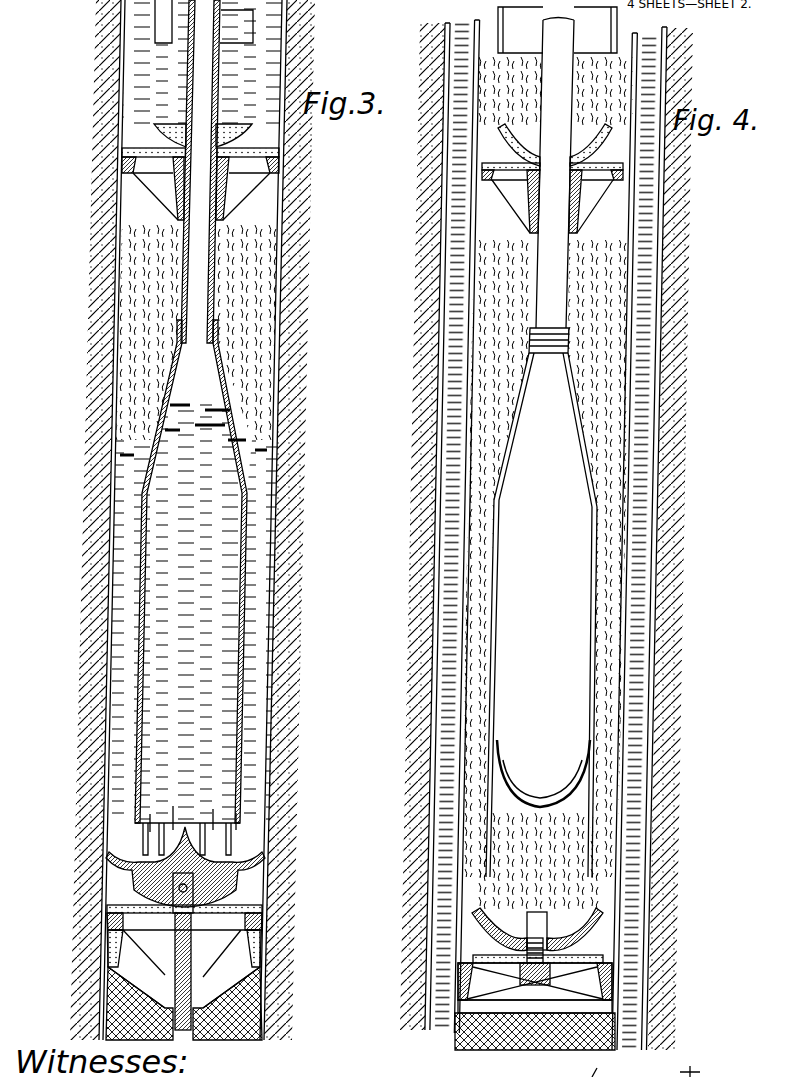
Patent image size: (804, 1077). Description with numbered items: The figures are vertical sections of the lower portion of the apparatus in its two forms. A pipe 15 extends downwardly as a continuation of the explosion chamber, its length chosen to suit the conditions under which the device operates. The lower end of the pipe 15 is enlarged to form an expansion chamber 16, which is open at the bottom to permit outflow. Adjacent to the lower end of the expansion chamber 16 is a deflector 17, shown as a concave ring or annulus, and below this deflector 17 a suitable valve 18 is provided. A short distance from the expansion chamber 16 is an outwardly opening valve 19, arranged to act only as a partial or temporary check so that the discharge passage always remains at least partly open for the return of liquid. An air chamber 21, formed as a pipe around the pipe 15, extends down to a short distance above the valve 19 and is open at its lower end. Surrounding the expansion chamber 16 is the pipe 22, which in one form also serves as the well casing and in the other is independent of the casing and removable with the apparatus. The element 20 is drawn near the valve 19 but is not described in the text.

In FIG. 3, the delivery tube 15 is at (200, 171).
In FIG. 4, the delivery tube 15 is at (551, 186).
In FIG. 3, the cement receptacle 16 is at (191, 587).
In FIG. 4, the cement receptacle 16 is at (541, 615).
In FIG. 3, the lower deflector 17 is at (130, 848).
In FIG. 4, the lower deflector 17 is at (537, 929).
In FIG. 3, the bottom plug 18 is at (243, 907).
In FIG. 4, the bottom plug 18 is at (535, 994).
In FIG. 3, the upper deflector cone 19 is at (201, 172).
In FIG. 4, the upper deflector cone 19 is at (600, 143).
In FIG. 3, the deflector plate 20 is at (276, 174).
In FIG. 4, the deflector plate 20 is at (482, 184).
In FIG. 3, the collar 21 is at (155, 29).
In FIG. 4, the collar 21 is at (557, 30).
In FIG. 3, the well casing 22 is at (280, 493).
In FIG. 4, the well casing 22 is at (657, 537).